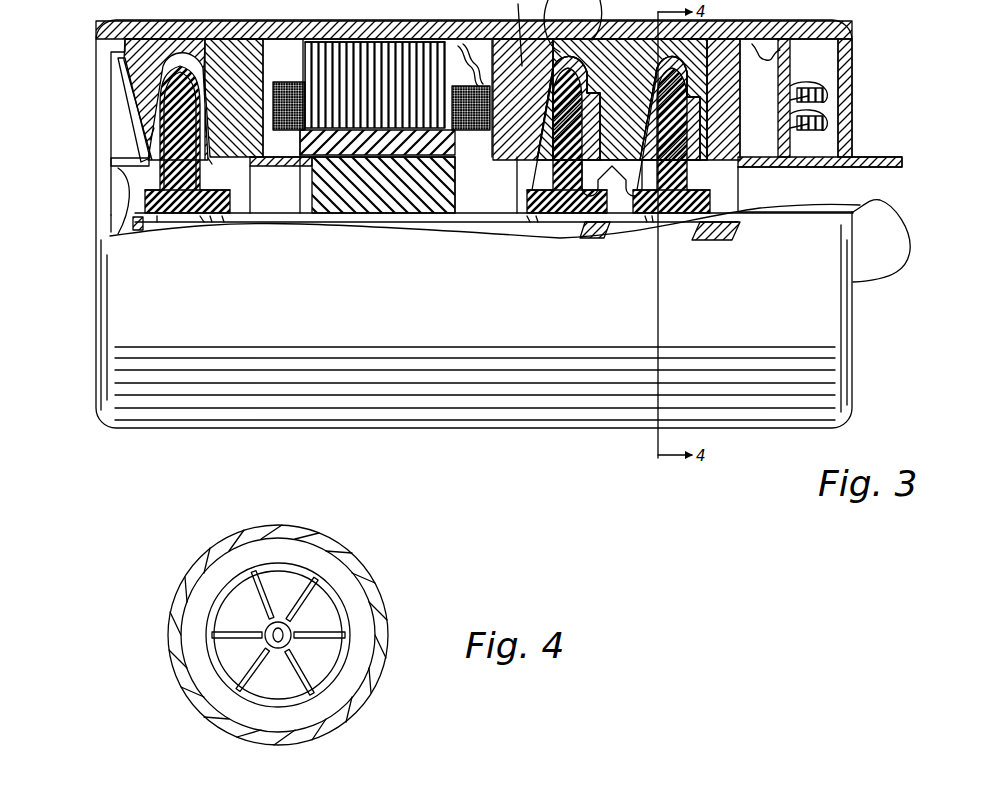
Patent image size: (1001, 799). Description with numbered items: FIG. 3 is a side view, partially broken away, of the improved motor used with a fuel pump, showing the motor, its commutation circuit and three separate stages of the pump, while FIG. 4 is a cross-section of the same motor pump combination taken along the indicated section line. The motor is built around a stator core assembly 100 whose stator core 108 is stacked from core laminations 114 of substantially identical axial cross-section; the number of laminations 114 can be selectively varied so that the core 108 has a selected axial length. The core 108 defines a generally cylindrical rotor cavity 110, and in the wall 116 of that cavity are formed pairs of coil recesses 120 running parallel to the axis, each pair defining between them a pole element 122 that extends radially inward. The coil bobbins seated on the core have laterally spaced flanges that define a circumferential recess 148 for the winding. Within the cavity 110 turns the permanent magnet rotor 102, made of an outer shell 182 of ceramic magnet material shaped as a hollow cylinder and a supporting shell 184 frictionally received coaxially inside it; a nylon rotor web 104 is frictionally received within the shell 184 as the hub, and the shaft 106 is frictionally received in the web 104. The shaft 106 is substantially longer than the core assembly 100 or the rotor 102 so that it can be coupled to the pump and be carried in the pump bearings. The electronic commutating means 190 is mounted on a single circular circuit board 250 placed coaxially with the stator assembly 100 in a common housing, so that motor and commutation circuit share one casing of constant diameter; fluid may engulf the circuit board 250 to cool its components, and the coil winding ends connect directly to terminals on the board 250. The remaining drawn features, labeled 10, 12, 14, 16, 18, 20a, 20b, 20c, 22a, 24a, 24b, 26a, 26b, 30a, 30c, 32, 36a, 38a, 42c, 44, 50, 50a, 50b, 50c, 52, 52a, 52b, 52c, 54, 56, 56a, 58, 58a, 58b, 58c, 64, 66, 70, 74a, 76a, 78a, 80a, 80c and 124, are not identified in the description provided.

In FIG. 3, the electrical assembly 10 is at (282, 404).
In FIG. 4, the electrical assembly 10 is at (370, 565).
In FIG. 3, the can 12 is at (422, 428).
In FIG. 4, the can 12 is at (388, 629).
In FIG. 3, the housing cap 14 is at (96, 45).
In FIG. 3, the inner wall 16 is at (111, 118).
In FIG. 3, the cap side wall 18 is at (854, 142).
In FIG. 3, the spring clip 20a is at (190, 106).
In FIG. 3, the spring clip 20b is at (549, 199).
In FIG. 3, the spring clip 20c is at (679, 187).
In FIG. 3, the insulating body 22a is at (198, 46).
In FIG. 3, the ledge 24a is at (118, 160).
In FIG. 3, the ledge 24b is at (486, 185).
In FIG. 3, the rim 26a is at (118, 180).
In FIG. 3, the rim 26b is at (514, 206).
In FIG. 3, the wall 30a is at (256, 170).
In FIG. 3, the bracket 30c is at (807, 197).
In FIG. 3, the insulating block 32 is at (622, 86).
In FIG. 3, the leaf spring 36a is at (118, 88).
In FIG. 3, the insulating block 38a is at (236, 80).
In FIG. 3, the insulating block 42c is at (746, 44).
In FIG. 3, the recess 44 is at (632, 183).
In FIG. 4, the hub 50 is at (287, 612).
In FIG. 3, the clip arm 50a is at (148, 142).
In FIG. 3, the clip arm 50b is at (530, 222).
In FIG. 3, the clip arm 50c is at (647, 223).
In FIG. 4, the plate 52 is at (322, 656).
In FIG. 3, the spring wire 52a is at (200, 72).
In FIG. 3, the spring wire 52b is at (566, 223).
In FIG. 3, the spring wire 52c is at (700, 233).
In FIG. 4, the spoke 54 is at (256, 582).
In FIG. 4, the spoke 56 is at (258, 656).
In FIG. 3, the clip foot 56a is at (133, 226).
In FIG. 4, the spoke 58 is at (266, 632).
In FIG. 3, the clip base 58a is at (157, 222).
In FIG. 3, the clip base 58b is at (537, 222).
In FIG. 3, the clip base 58c is at (653, 223).
In FIG. 4, the spoke 64 is at (206, 554).
In FIG. 4, the spoke 66 is at (268, 572).
In FIG. 4, the ring 70 is at (332, 608).
In FIG. 3, the clip leg 74a is at (224, 222).
In FIG. 3, the clip leg 76a is at (213, 222).
In FIG. 3, the clip shoulder 78a is at (212, 166).
In FIG. 3, the clip tab 80a is at (202, 222).
In FIG. 3, the clip tab 80c is at (596, 223).
In FIG. 3, the stator core assembly 100 is at (462, 48).
In FIG. 3, the permanent magnet rotor 102 is at (330, 168).
In FIG. 3, the rotor web 104 is at (412, 196).
In FIG. 3, the shaft 106 is at (705, 222).
In FIG. 3, the stator core 108 is at (326, 46).
In FIG. 3, the rotor cavity 110 is at (456, 126).
In FIG. 3, the core laminations 114 is at (405, 48).
In FIG. 3, the cavity wall 116 is at (312, 78).
In FIG. 3, the coil recesses 120 is at (524, 33).
In FIG. 3, the pole element 122 is at (581, 26).
In FIG. 3, the insulating block 124 is at (546, 99).
In FIG. 3, the circumferential recess 148 is at (282, 126).
In FIG. 3, the outer magnetic shell 182 is at (358, 222).
In FIG. 3, the supporting shell 184 is at (420, 170).
In FIG. 3, the electronic commutating means 190 is at (824, 93).
In FIG. 3, the circular circuit board 250 is at (800, 46).